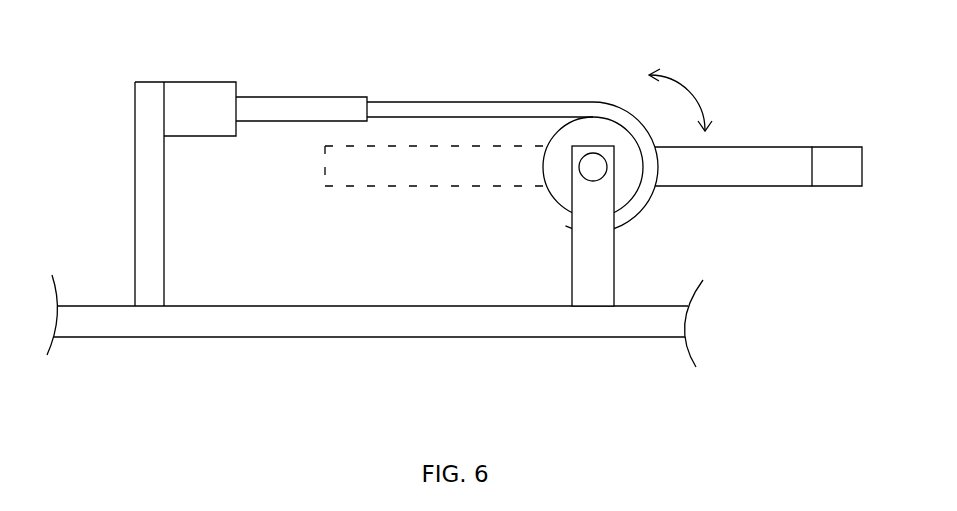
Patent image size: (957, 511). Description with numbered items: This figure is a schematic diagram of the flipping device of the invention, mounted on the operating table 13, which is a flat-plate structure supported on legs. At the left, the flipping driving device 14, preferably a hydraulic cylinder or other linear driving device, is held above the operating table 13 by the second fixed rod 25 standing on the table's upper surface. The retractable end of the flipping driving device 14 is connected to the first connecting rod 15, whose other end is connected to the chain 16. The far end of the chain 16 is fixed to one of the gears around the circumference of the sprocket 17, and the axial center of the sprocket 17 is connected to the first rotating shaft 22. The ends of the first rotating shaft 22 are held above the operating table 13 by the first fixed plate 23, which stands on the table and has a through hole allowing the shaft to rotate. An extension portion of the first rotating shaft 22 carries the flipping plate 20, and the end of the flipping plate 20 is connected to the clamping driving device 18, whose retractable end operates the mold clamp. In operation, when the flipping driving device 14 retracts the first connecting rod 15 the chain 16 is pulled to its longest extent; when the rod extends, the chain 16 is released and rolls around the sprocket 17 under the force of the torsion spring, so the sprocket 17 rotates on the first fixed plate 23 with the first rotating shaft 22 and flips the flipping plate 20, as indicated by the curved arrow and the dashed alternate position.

The operating table 13 is at (270, 327).
The flipping driving device 14 is at (203, 103).
The first connecting rod 15 is at (302, 95).
The chain 16 is at (481, 98).
The sprocket 17 is at (593, 130).
The clamping driving device 18 is at (836, 167).
The flipping plate 20 is at (438, 145).
The first rotating shaft 22 is at (600, 172).
The first fixed plate 23 is at (590, 268).
The second fixed rod 25 is at (148, 253).